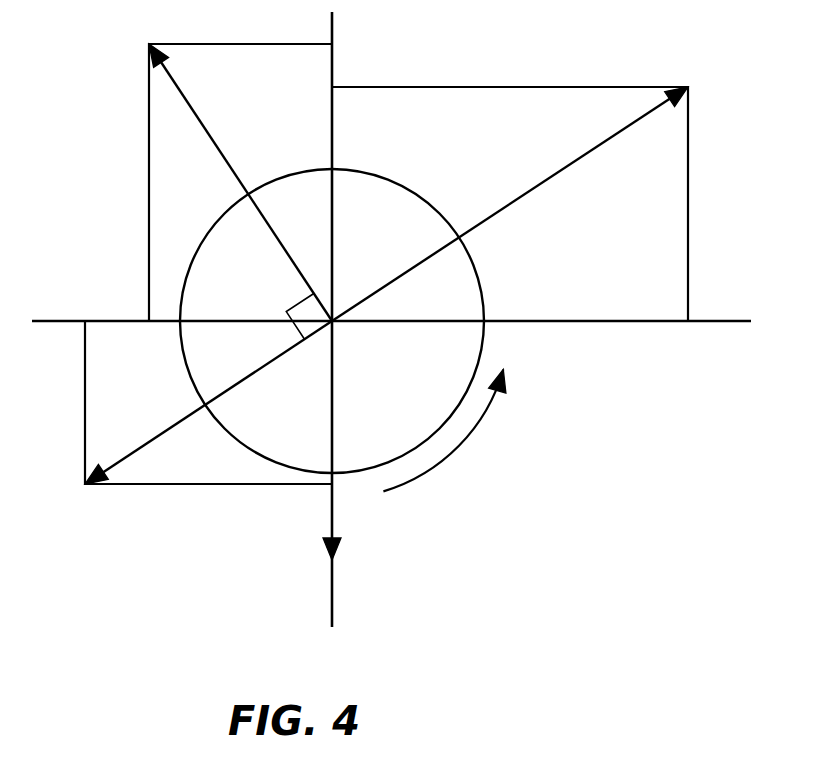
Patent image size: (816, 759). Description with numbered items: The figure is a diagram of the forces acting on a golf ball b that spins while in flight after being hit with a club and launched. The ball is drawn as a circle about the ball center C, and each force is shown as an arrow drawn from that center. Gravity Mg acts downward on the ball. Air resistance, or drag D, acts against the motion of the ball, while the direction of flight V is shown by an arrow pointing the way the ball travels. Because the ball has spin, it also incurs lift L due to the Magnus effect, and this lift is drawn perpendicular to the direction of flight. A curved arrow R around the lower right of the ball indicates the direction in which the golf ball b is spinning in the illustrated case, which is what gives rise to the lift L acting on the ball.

The lift L is at (228, 166).
The direction of flight V is at (525, 187).
The air resistance (drag) D is at (192, 420).
The ball center C is at (323, 328).
The arrow indicating spin direction R is at (452, 412).
The golf ball b is at (275, 427).
The gravity Mg is at (356, 571).